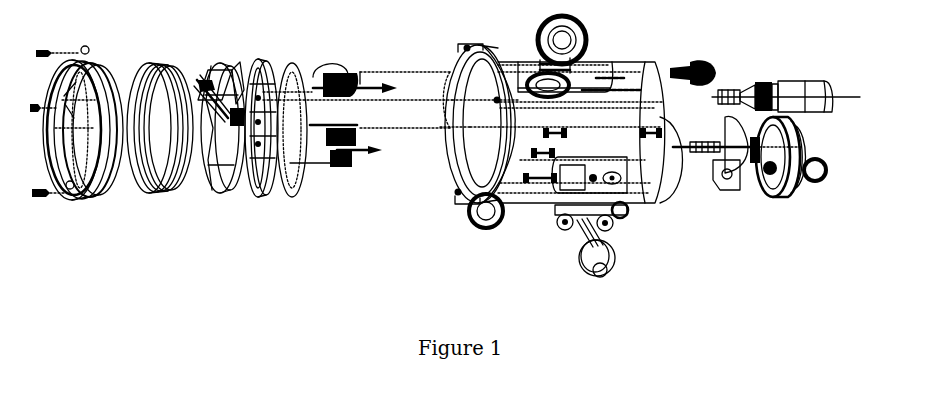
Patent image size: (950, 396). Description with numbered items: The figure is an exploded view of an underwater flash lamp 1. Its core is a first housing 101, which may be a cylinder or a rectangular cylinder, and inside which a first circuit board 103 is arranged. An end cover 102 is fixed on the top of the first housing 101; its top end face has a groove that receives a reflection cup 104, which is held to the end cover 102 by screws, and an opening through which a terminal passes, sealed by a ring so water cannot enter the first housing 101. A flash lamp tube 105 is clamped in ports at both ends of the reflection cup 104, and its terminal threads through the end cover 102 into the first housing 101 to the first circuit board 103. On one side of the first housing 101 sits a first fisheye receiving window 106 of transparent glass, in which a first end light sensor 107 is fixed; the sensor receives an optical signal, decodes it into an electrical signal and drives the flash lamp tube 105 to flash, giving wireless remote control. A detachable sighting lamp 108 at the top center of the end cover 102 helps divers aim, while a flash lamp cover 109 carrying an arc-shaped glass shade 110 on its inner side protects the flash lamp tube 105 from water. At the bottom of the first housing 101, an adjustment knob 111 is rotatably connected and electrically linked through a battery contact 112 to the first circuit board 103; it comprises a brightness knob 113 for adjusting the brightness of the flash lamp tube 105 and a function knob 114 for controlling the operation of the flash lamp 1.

The flash lamp 1 is at (523, 168).
The first housing 101 is at (623, 118).
The end cover 102 is at (227, 177).
The first circuit board 103 is at (337, 72).
The reflection cup 104 is at (190, 80).
The flash lamp tube 105 is at (227, 80).
The first fisheye receiving window 106 is at (552, 34).
The first end light sensor 107 is at (520, 98).
The sighting lamp 108 is at (277, 173).
The flash lamp cover 109 is at (98, 190).
The arc-shaped glass shade 110 is at (145, 153).
The adjustment knob 111 is at (780, 84).
The battery contact 112 is at (741, 130).
The brightness knob 113 is at (705, 160).
The function knob 114 is at (815, 88).